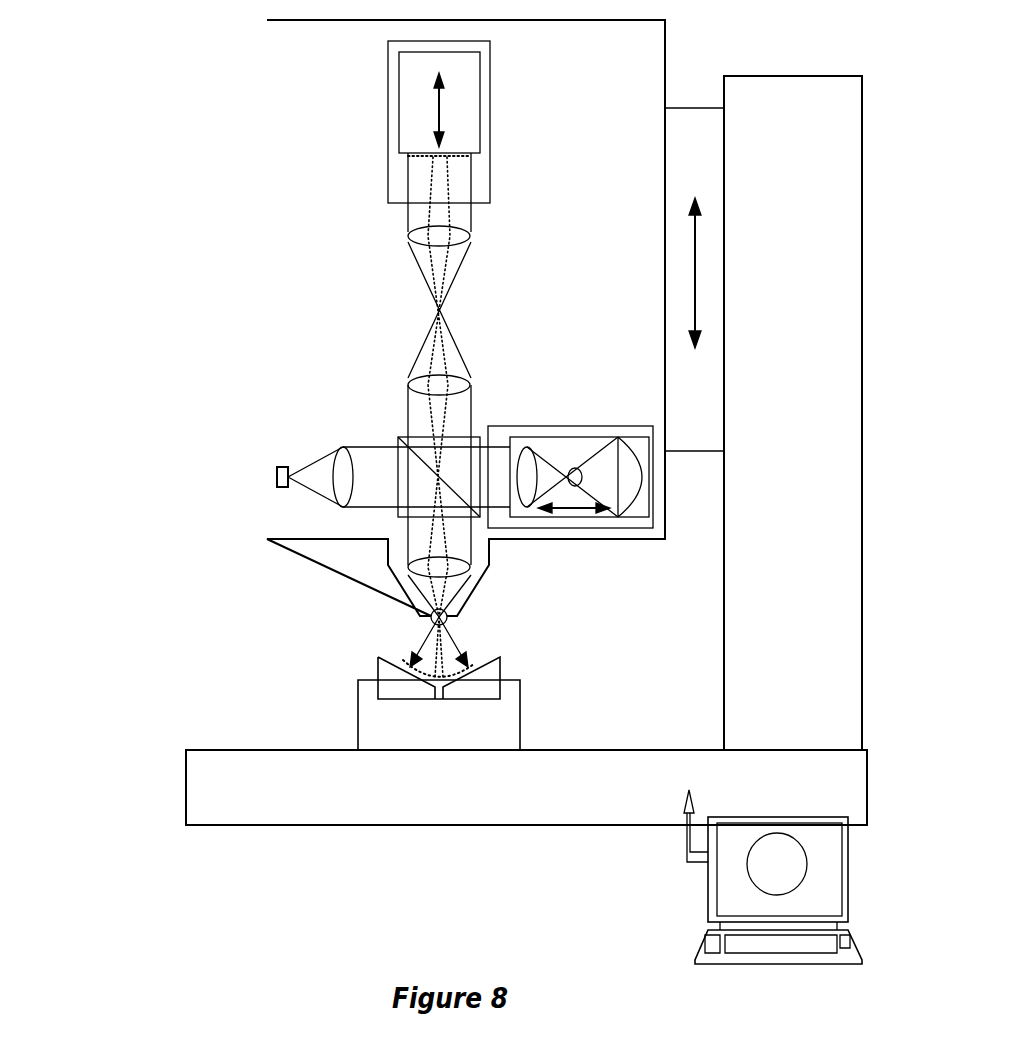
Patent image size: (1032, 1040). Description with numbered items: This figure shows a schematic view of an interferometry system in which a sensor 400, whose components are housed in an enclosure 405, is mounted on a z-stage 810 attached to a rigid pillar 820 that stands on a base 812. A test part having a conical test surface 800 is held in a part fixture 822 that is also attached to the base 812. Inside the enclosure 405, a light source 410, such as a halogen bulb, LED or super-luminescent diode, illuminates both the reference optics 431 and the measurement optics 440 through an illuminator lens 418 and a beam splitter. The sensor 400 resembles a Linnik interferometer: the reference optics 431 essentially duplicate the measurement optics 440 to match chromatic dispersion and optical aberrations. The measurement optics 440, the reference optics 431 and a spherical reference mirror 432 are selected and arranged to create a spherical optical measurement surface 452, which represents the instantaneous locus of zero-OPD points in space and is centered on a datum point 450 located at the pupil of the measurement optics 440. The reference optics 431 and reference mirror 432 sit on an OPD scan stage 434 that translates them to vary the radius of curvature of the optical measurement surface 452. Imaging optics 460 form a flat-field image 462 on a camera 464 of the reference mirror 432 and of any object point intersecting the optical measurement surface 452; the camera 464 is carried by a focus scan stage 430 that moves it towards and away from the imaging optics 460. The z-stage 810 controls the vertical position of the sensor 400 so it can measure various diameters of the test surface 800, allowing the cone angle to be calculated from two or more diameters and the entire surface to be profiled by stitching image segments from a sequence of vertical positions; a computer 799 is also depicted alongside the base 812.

The sensor 400 is at (190, 162).
The enclosure 405 is at (267, 90).
The light source 410 is at (277, 477).
The illuminator lens 418 is at (347, 477).
The focus scan stage 430 is at (490, 90).
The reference optics 431 is at (593, 410).
The spherical reference mirror 432 is at (643, 445).
The OPD scan stage 434 is at (562, 520).
The measurement optics 440 is at (378, 558).
The datum point 450 is at (450, 618).
The spherical optical measurement surface 452 is at (470, 668).
The imaging optics 460 is at (388, 223).
The flat-field image 462 is at (468, 157).
The camera 464 is at (480, 110).
The computer 799 is at (707, 868).
The conical test surface 800 is at (380, 658).
The z-stage 810 is at (693, 451).
The base 812 is at (186, 788).
The rigid pillar 820 is at (723, 687).
The part fixture 822 is at (360, 680).